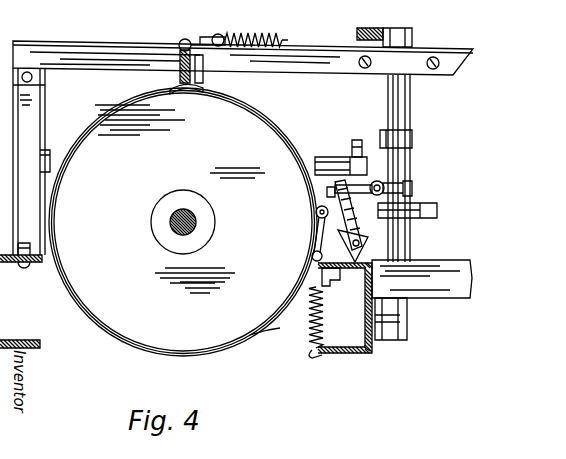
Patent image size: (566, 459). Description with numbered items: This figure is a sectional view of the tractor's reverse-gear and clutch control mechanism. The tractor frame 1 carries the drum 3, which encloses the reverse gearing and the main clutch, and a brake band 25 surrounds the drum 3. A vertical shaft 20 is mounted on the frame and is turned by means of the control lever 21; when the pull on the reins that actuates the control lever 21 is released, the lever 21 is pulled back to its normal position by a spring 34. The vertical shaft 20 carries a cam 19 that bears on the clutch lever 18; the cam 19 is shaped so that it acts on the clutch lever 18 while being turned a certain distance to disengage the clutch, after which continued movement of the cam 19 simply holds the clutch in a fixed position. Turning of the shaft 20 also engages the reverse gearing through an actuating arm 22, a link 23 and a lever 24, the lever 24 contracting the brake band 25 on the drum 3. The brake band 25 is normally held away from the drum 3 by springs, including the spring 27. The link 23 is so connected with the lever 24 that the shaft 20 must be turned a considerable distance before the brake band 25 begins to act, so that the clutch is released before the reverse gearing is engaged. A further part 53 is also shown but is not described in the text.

The tractor frame 1 is at (0, 305).
The drum 3 is at (130, 338).
The brake band 25 is at (254, 340).
The spring 27 is at (182, 58).
The spring 34 is at (283, 33).
The lever 21 is at (360, 28).
The vertical shaft 20 is at (405, 84).
The cam 19 is at (358, 130).
The lever 18 is at (350, 148).
The link 23 is at (390, 170).
The actuating arm 22 is at (412, 190).
The bar 53 is at (438, 208).
The lever 24 is at (372, 238).